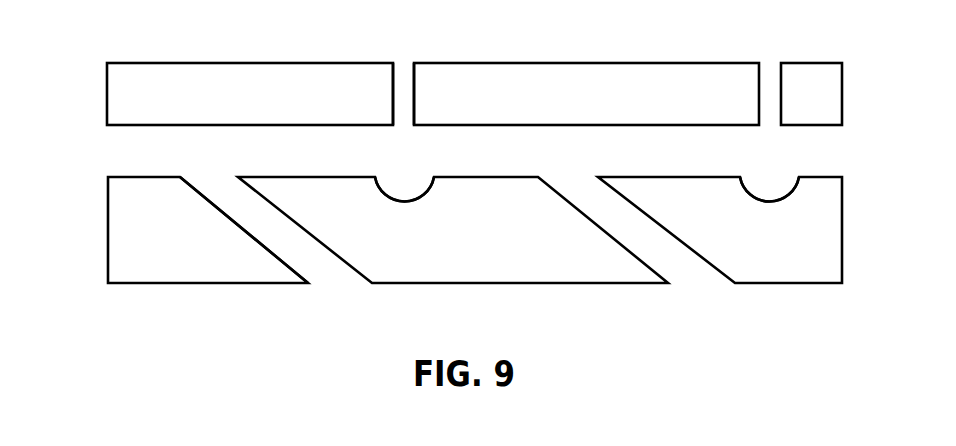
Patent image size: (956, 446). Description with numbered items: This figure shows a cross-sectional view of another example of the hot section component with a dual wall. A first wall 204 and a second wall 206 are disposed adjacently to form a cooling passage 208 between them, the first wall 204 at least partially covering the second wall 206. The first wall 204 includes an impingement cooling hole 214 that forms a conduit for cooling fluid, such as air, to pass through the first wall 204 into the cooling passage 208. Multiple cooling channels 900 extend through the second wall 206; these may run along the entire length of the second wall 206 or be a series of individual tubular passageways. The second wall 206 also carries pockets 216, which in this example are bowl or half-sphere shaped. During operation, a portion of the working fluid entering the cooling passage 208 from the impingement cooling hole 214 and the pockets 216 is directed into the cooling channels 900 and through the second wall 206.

The first wall 204 is at (157, 76).
The impingement cooling hole 214 is at (396, 83).
The cooling passage 208 is at (436, 200).
The second wall 206 is at (169, 230).
The cooling channel 900 is at (276, 237).
The pocket 216 is at (385, 190).